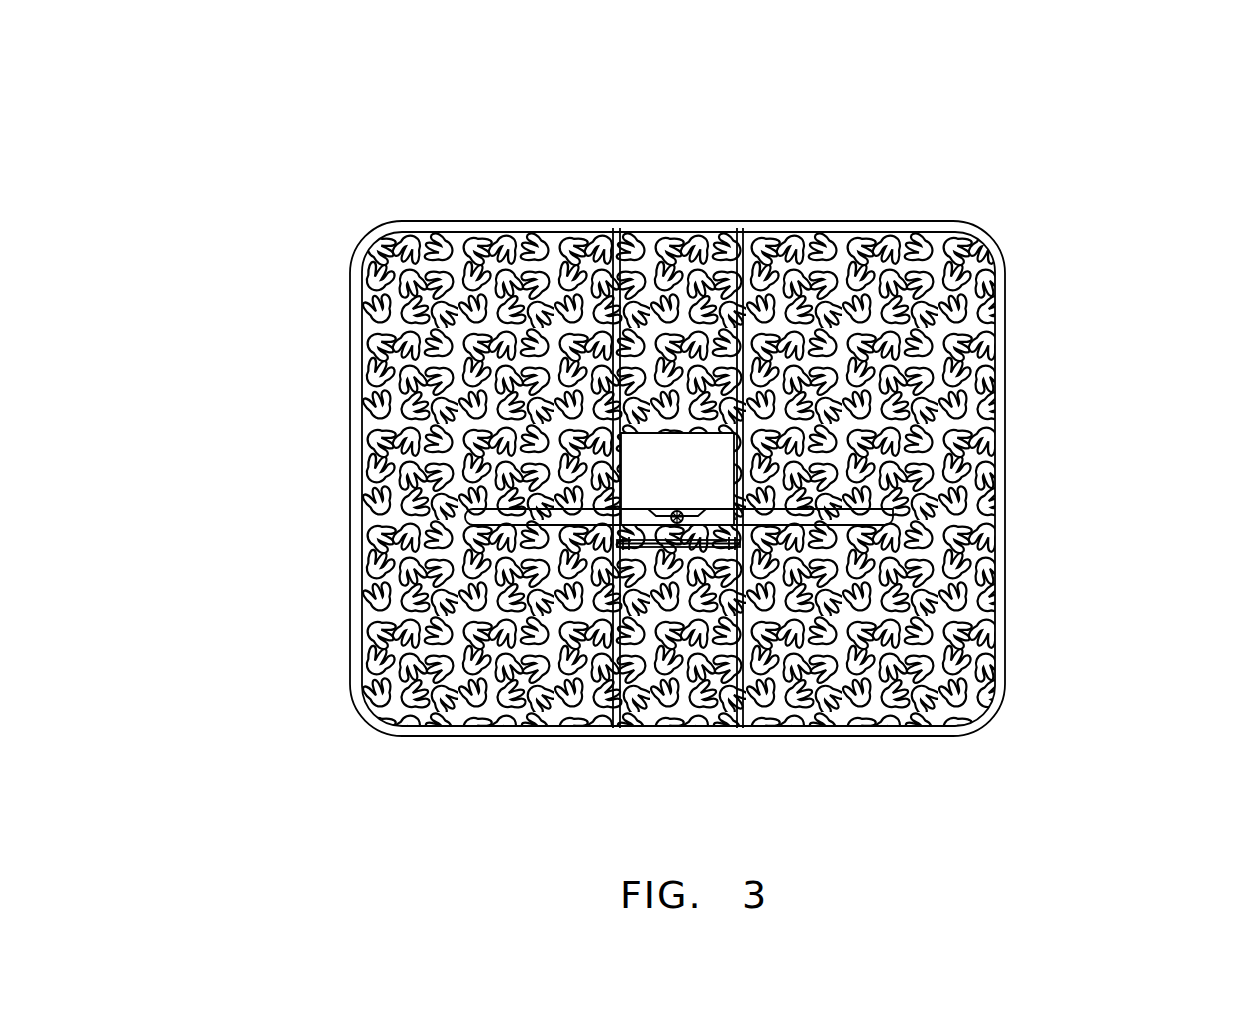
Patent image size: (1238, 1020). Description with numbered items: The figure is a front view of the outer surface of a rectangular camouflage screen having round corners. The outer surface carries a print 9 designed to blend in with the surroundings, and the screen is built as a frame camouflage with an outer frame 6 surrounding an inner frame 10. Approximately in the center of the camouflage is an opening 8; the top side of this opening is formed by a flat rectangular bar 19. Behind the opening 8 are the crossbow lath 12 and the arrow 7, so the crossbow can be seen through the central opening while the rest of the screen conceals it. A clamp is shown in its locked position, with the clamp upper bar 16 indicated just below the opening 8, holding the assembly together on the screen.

The outer frame 6 is at (602, 459).
The arrow 7 is at (579, 652).
The opening 8 is at (849, 309).
The print 9 is at (786, 445).
The inner frame 10 is at (799, 464).
The crossbow lath 12 is at (904, 684).
The clamp upper bar 16 is at (842, 666).
The flat rectangular bar 19 is at (769, 280).